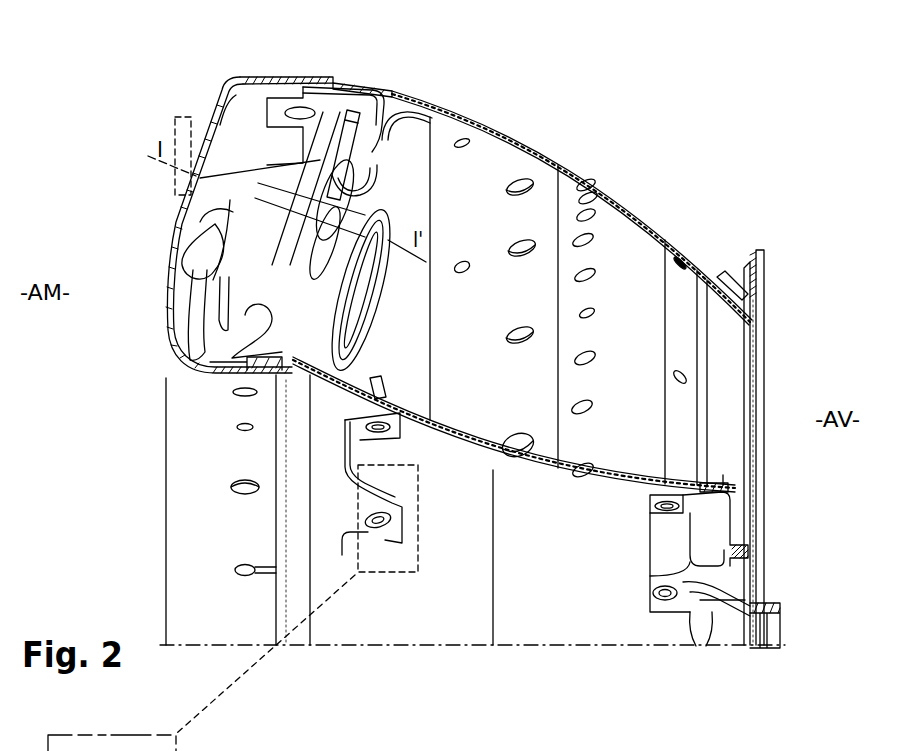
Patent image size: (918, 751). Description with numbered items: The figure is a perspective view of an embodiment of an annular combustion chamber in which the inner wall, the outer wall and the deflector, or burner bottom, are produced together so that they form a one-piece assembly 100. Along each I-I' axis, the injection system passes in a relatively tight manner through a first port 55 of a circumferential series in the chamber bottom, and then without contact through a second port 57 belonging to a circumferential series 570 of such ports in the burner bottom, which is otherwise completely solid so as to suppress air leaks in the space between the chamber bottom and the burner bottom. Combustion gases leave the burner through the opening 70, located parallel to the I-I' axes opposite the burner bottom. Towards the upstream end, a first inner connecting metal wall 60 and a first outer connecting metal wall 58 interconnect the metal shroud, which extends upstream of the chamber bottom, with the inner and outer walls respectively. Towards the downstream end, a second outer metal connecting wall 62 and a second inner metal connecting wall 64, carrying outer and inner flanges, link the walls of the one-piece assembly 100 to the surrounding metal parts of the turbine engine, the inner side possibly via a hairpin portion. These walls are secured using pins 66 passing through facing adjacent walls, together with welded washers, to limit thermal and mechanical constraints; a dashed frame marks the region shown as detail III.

The first port 55 is at (387, 163).
The second port 57 is at (285, 355).
The first outer connecting metal wall 58 is at (410, 97).
The first inner connecting metal wall 60 is at (333, 507).
The second outer metal connecting wall 62 is at (724, 280).
The second inner metal connecting wall 64 is at (712, 532).
The pins 66 is at (664, 600).
The opening 70 is at (737, 415).
The one-piece assembly 100 is at (687, 244).
The circumferential series of second ports 570 is at (366, 304).
The detail III is at (390, 580).